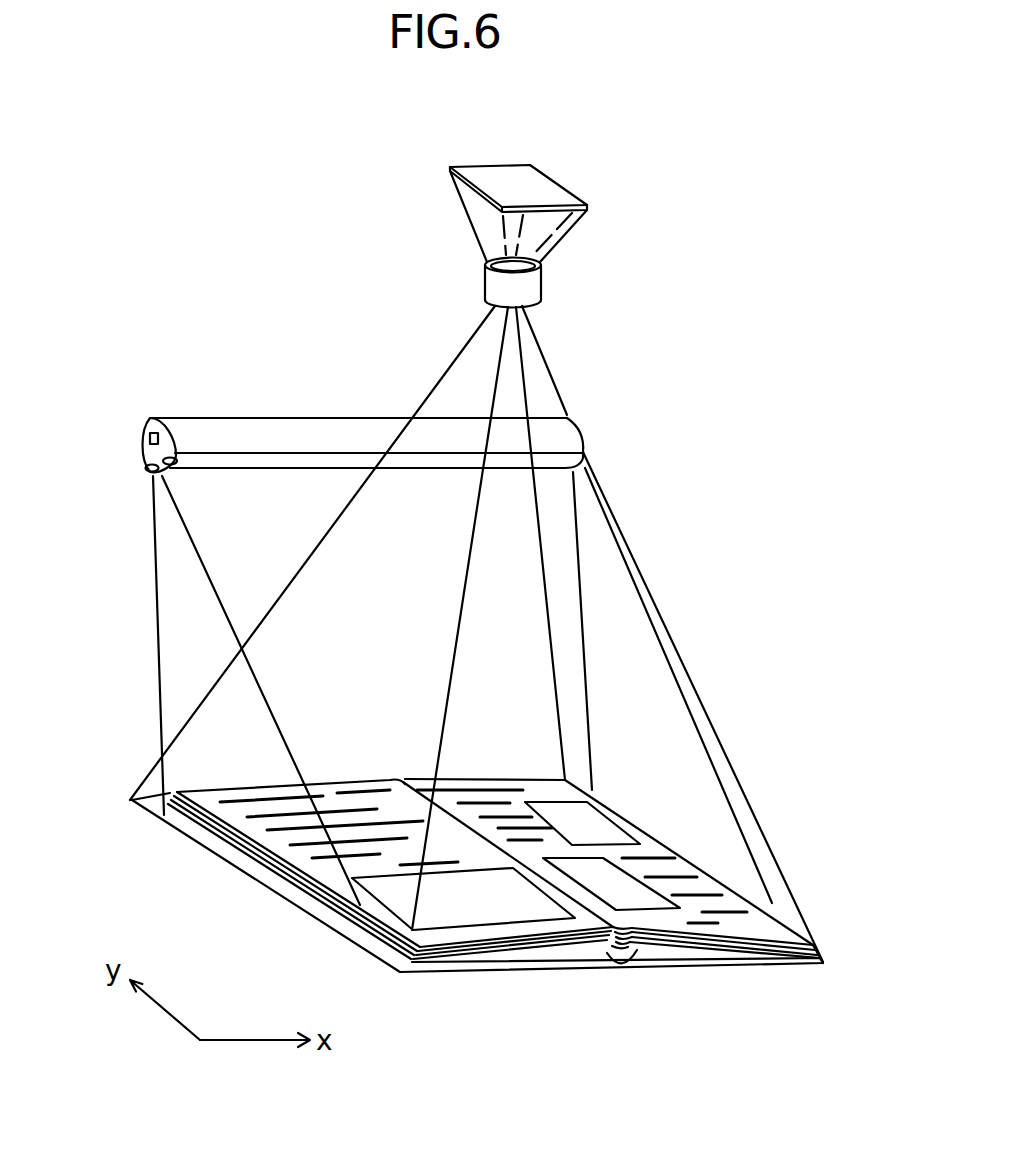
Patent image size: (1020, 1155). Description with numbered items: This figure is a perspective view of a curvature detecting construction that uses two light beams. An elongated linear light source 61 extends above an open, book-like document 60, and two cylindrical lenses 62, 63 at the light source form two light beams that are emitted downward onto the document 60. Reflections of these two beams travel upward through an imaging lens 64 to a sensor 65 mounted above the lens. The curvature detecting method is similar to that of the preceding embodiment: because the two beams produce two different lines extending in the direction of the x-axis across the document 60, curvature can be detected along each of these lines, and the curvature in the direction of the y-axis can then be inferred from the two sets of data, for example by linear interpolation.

The document 60 is at (257, 878).
The linear light source 61 is at (143, 432).
The cylindrical lens 62 is at (145, 474).
The cylindrical lens 63 is at (172, 465).
The imaging lens 64 is at (543, 284).
The sensor 65 is at (563, 192).